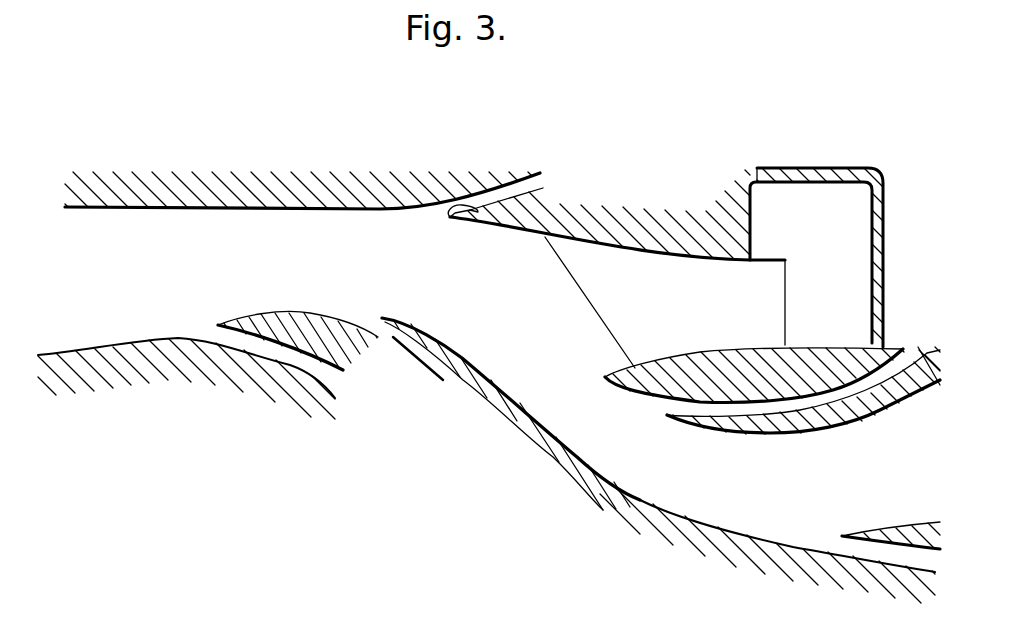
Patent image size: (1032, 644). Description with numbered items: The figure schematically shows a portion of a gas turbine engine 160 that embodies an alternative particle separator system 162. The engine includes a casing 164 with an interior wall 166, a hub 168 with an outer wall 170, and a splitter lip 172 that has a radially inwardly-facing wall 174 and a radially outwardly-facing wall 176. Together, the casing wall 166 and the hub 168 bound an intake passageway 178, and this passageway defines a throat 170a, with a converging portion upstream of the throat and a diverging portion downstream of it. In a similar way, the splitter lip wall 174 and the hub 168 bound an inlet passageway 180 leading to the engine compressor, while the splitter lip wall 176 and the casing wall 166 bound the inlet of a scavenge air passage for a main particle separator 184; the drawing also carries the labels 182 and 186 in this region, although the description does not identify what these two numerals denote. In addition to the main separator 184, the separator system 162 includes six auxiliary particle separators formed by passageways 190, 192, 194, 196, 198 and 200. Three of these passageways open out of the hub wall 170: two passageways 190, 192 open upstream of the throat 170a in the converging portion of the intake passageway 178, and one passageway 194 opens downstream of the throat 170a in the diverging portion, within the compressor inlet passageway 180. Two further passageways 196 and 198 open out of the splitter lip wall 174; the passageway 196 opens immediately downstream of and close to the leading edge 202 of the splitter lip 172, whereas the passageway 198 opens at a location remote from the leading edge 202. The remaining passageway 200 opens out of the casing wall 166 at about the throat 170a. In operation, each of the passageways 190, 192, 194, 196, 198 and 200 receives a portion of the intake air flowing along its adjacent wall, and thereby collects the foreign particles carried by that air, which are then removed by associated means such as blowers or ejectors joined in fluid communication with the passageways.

The gas turbine engine 160 is at (640, 142).
The separator system 162 is at (357, 178).
The casing 164 is at (95, 207).
The interior wall of casing 166 is at (172, 208).
The hub 168 is at (100, 351).
The outer wall of hub 170 is at (282, 313).
The throat 170a is at (376, 209).
The splitter lip 172 is at (700, 350).
The radially inwardly-facing wall of splitter lip 174 is at (735, 437).
The radially outwardly-facing wall of splitter lip 176 is at (756, 349).
The intake passageway 178 is at (137, 195).
The compressor inlet passageway 180 is at (648, 507).
The outer lip of extraction passage 182 is at (631, 248).
The main particle separator 184 is at (580, 310).
The curved splitter wall 186 is at (522, 416).
The auxiliary separator passageway 190 is at (245, 353).
The auxiliary separator passageway 192 is at (394, 347).
The auxiliary separator passageway 194 is at (858, 560).
The auxiliary separator passageway 196 is at (660, 412).
The auxiliary separator passageway 198 is at (838, 432).
The auxiliary separator passageway 200 is at (449, 219).
The leading edge of splitter lip 202 is at (607, 373).